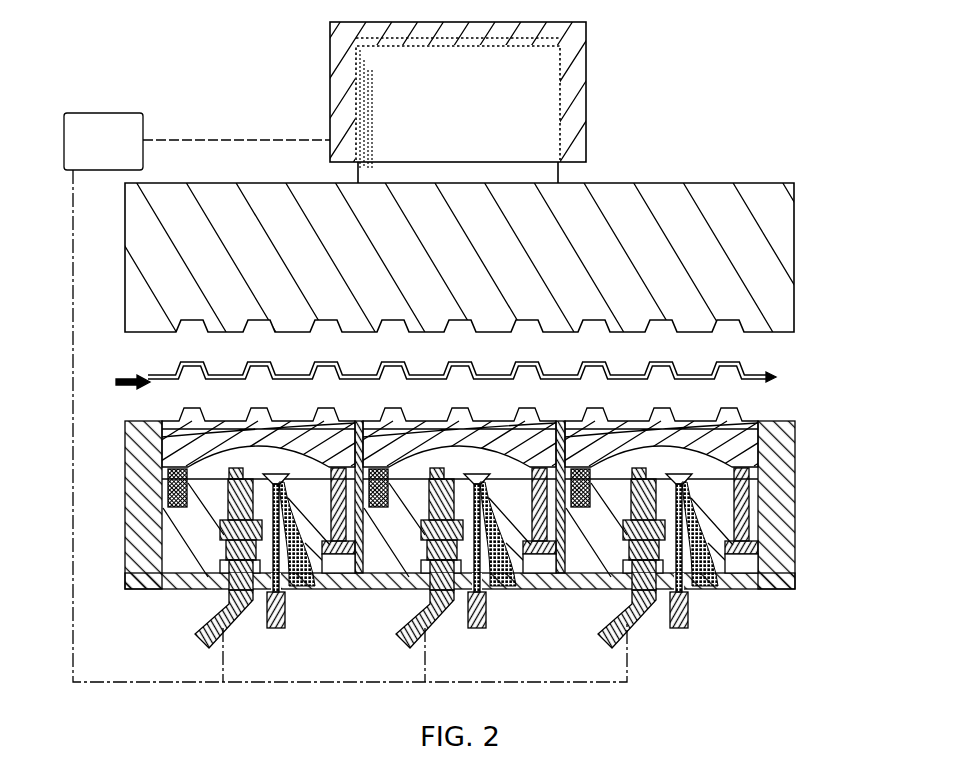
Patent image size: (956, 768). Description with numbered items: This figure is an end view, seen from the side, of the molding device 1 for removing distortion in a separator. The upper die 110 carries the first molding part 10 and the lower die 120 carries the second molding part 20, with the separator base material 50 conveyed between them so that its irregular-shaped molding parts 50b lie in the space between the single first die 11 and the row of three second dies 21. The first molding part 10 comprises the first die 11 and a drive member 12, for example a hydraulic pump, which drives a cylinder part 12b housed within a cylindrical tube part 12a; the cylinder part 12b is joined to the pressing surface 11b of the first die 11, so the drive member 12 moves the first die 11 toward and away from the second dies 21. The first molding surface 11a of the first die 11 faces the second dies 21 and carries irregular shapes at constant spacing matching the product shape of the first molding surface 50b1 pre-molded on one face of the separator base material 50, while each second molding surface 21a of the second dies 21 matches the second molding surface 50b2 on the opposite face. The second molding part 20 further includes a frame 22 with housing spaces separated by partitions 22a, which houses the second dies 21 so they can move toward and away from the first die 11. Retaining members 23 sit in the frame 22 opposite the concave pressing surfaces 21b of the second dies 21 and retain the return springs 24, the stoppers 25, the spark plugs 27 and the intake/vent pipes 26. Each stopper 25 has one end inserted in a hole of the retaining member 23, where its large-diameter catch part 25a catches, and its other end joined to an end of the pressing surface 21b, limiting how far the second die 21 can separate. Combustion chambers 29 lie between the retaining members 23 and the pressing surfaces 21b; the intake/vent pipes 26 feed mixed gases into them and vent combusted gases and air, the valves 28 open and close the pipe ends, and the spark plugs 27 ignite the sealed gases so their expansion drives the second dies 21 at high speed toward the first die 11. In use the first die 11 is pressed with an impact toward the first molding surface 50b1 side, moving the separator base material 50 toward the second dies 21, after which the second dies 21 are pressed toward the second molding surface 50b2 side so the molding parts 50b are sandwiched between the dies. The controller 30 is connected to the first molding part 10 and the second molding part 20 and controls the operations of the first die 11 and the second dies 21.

The molding device 1 is at (104, 62).
The controller 30 is at (140, 103).
The upper die 110 is at (718, 60).
The first molding part 10 is at (652, 90).
The drive member 12 is at (586, 86).
The cylindrical tube part 12a is at (582, 125).
The cylinder part 12b is at (545, 177).
The first die 11 is at (794, 232).
The first molding surface 11a is at (735, 322).
The pressing surface 11b is at (723, 183).
The separator base material 50 is at (280, 376).
The molding parts 50b is at (350, 370).
The first molding surface 50b1 is at (393, 352).
The second molding surface 50b2 is at (393, 400).
The lower die 120 is at (125, 694).
The second molding part 20 is at (136, 640).
The frame 22 is at (132, 553).
The partitions 22a is at (165, 421).
The second dies 21 is at (440, 502).
The second molding surface 21a is at (492, 397).
The pressing surfaces 21b is at (747, 480).
The return springs 24 is at (368, 557).
The retaining members 23 is at (442, 558).
The spark plugs 27 is at (418, 628).
The valves 28 is at (480, 566).
The combustion chambers 29 is at (501, 576).
The stoppers 25 is at (570, 548).
The catch part 25a is at (757, 553).
The intake/vent pipes 26 is at (540, 603).